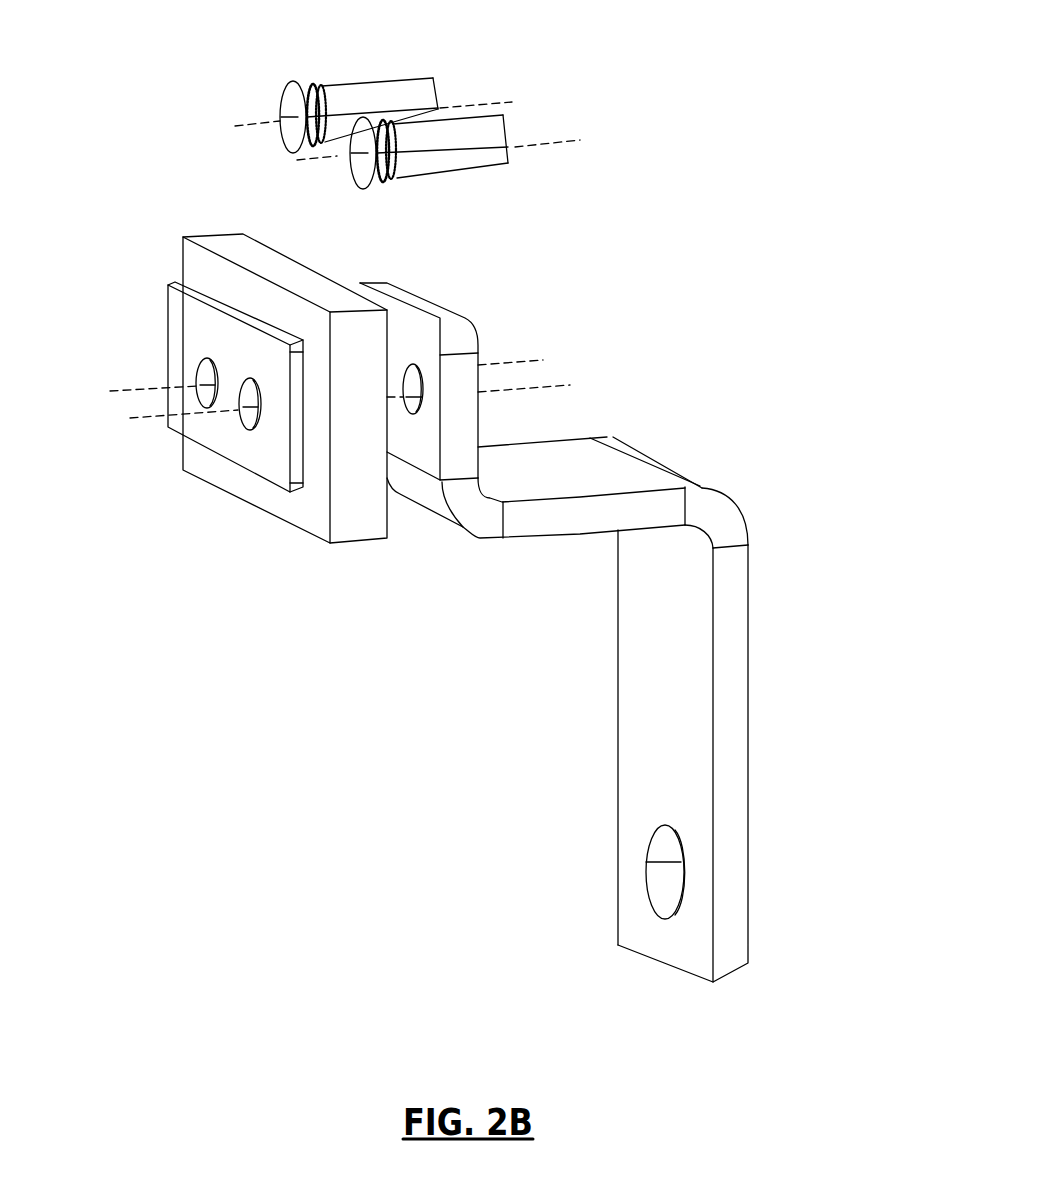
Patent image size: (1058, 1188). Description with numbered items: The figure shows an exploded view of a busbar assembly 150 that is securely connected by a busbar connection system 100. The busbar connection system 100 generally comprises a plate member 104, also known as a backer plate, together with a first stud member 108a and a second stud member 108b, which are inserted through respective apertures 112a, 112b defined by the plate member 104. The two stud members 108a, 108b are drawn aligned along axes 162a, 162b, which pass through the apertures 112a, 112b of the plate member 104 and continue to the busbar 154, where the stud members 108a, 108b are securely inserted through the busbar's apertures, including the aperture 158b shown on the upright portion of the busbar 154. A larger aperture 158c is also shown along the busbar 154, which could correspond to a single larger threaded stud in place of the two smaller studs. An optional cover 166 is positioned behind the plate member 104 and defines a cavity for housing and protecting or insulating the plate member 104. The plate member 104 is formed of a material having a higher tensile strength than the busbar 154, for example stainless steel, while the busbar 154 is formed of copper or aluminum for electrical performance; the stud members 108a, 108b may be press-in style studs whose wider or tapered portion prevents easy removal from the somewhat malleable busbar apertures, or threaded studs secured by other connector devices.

The busbar connection system 100 is at (170, 117).
The plate member 104 is at (168, 343).
The first stud member 108a is at (373, 80).
The second stud member 108b is at (440, 173).
The first aperture 112a is at (203, 358).
The second aperture 112b is at (250, 431).
The busbar assembly 150 is at (834, 254).
The busbar 154 is at (750, 760).
The second aperture 158b is at (413, 363).
The larger aperture 158c is at (663, 917).
The first axis 162a is at (513, 102).
The second axis 162b is at (570, 141).
The cover 166 is at (206, 235).